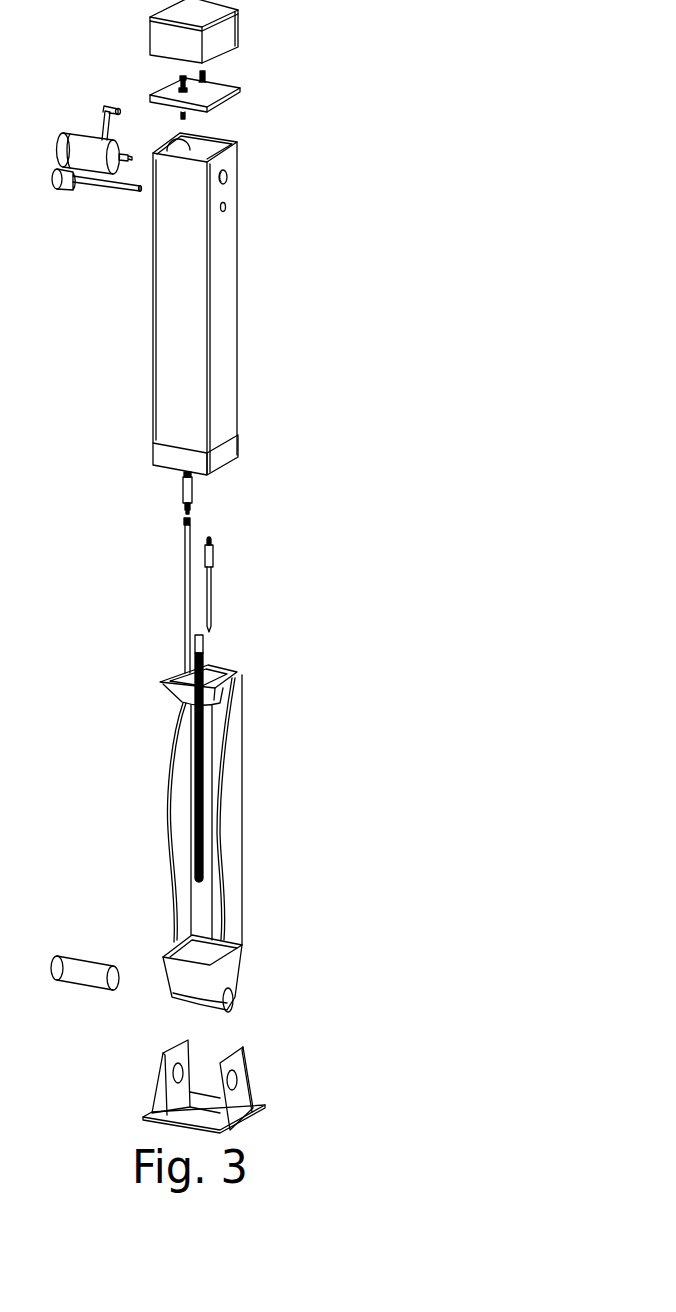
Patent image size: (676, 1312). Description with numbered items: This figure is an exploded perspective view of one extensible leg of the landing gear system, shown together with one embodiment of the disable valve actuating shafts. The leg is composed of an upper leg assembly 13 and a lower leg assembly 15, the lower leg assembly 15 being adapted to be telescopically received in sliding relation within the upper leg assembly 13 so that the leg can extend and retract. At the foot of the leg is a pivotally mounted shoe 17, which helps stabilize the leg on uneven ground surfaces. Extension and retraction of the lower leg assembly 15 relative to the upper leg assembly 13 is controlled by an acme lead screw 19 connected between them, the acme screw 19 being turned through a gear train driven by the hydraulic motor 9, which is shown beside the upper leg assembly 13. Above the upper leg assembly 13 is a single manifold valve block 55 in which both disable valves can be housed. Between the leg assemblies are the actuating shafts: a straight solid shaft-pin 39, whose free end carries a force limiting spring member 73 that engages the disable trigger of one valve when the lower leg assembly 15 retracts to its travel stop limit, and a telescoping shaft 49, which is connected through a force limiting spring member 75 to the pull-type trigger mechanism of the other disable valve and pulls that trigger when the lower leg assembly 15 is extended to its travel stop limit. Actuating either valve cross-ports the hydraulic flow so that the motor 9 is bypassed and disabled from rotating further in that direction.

The manifold valve block 55 is at (202, 13).
The hydraulic motor 9 is at (86, 143).
The upper leg assembly 13 is at (168, 368).
The force limiting spring member 75 is at (183, 493).
The force limiting spring member 73 is at (215, 552).
The telescoping shaft 49 is at (187, 590).
The shaft-pin 39 is at (213, 582).
The lower leg assembly 15 is at (173, 757).
The acme lead screw 19 is at (205, 775).
The shoe 17 is at (258, 1102).